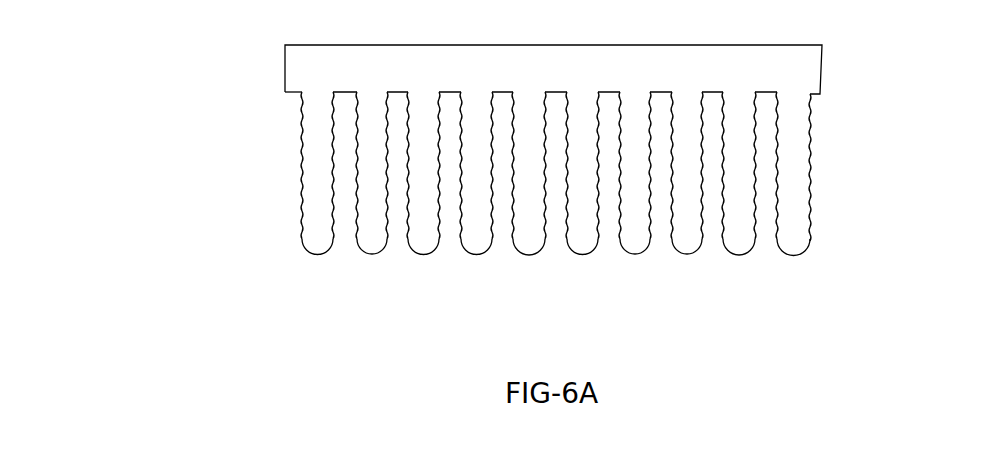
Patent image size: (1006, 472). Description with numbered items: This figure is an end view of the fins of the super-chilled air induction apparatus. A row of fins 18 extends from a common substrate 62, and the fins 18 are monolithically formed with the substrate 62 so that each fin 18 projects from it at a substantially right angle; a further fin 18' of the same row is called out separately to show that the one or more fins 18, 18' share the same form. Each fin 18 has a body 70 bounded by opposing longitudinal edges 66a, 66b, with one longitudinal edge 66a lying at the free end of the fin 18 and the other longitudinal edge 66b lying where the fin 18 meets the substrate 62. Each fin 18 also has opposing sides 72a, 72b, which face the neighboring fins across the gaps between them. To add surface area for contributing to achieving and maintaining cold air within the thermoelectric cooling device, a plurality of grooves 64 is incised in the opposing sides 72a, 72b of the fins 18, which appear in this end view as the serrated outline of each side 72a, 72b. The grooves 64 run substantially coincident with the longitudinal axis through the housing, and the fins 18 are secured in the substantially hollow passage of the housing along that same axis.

The substrate 62 is at (803, 71).
The grooves 64 is at (890, 183).
The longitudinal edge 66a is at (315, 254).
The longitudinal edge 66b is at (287, 93).
The body 70 is at (372, 237).
The side 72a is at (302, 175).
The side 72b is at (810, 142).
The fin 18 is at (220, 219).
The fin 18' is at (618, 207).